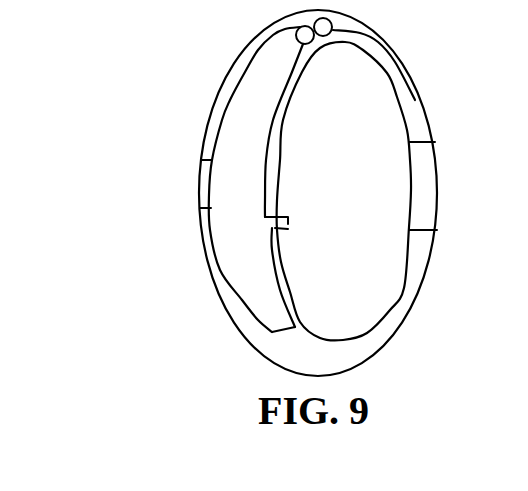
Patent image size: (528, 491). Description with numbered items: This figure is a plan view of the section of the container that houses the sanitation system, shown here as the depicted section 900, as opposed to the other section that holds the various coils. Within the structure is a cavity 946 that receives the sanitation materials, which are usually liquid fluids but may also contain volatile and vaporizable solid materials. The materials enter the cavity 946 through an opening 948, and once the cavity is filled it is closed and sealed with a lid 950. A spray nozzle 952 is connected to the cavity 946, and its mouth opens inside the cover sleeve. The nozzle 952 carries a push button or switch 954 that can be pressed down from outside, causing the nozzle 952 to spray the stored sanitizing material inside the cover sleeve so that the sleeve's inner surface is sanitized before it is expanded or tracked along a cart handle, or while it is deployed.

The ring device 900 is at (150, 81).
The cavity 946 is at (285, 331).
The opening 948 is at (334, 30).
The lid 950 is at (300, 30).
The spray nozzle 952 is at (293, 232).
The push button 954 is at (198, 185).